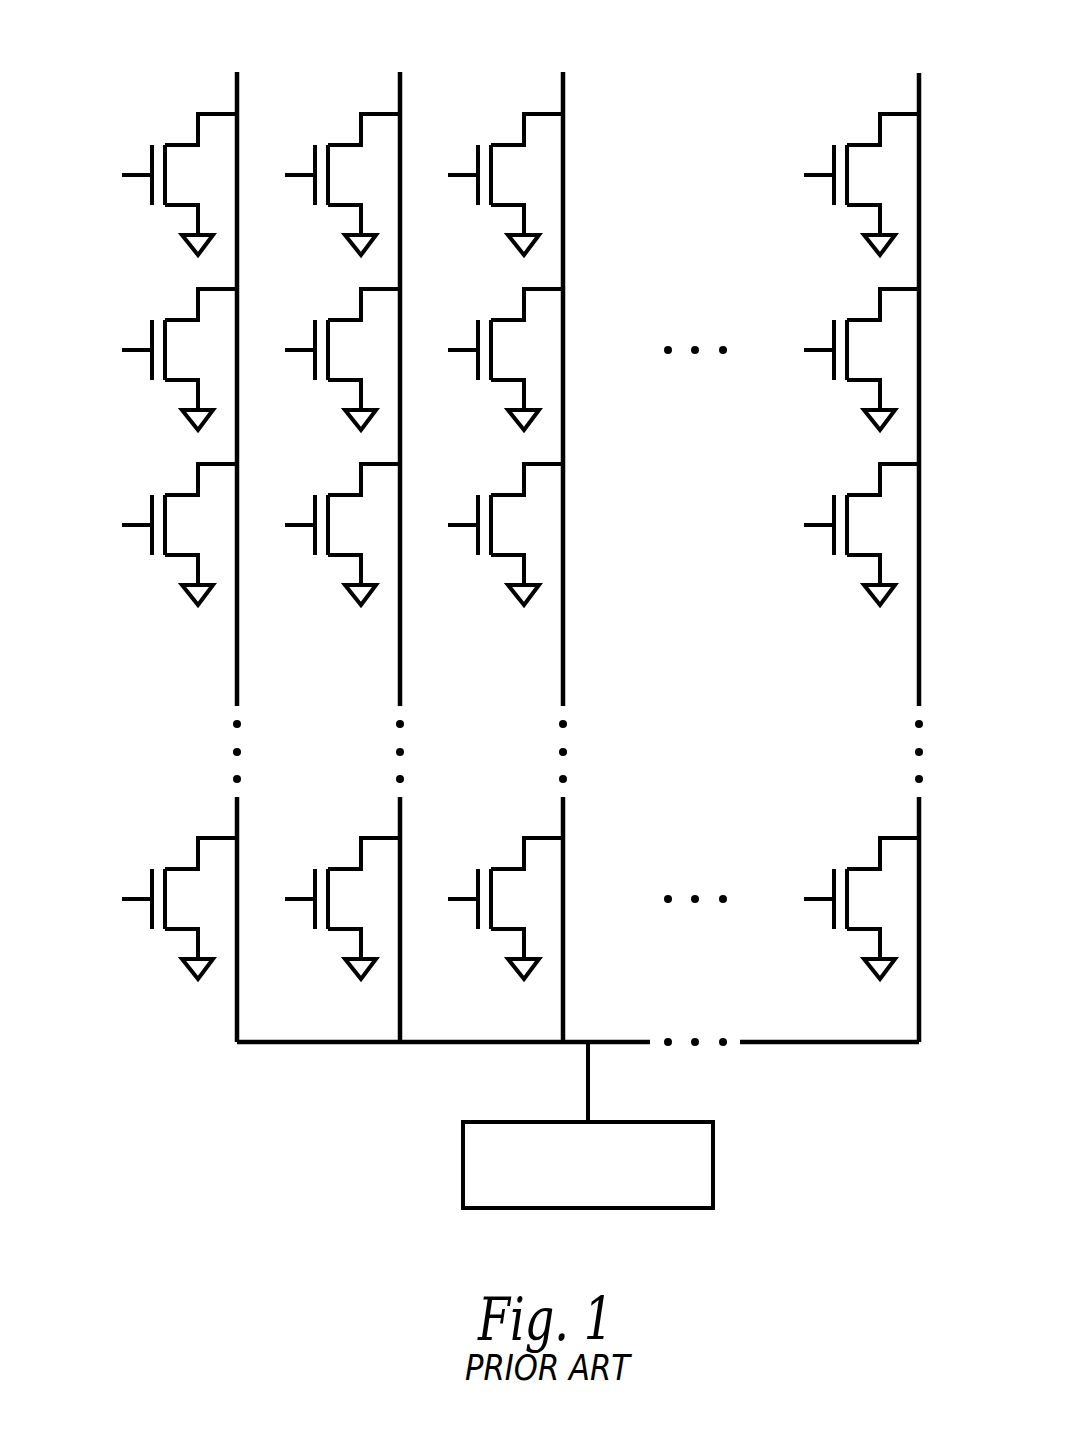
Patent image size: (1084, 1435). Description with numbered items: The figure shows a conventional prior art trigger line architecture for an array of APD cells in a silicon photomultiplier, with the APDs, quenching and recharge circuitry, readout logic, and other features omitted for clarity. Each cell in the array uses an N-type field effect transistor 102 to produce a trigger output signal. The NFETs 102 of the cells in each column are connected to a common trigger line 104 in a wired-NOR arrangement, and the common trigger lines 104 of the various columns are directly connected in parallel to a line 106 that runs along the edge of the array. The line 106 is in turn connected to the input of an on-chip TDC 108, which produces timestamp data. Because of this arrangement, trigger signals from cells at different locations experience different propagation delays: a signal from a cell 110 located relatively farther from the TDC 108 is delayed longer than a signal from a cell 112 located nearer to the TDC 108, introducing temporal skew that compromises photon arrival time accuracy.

The N-type field effect transistor 102 is at (182, 128).
The common trigger line 104 is at (238, 87).
The line 106 is at (332, 1041).
The on-chip TDC 108 is at (713, 1168).
The cell 110 is at (778, 213).
The cell 112 is at (603, 802).